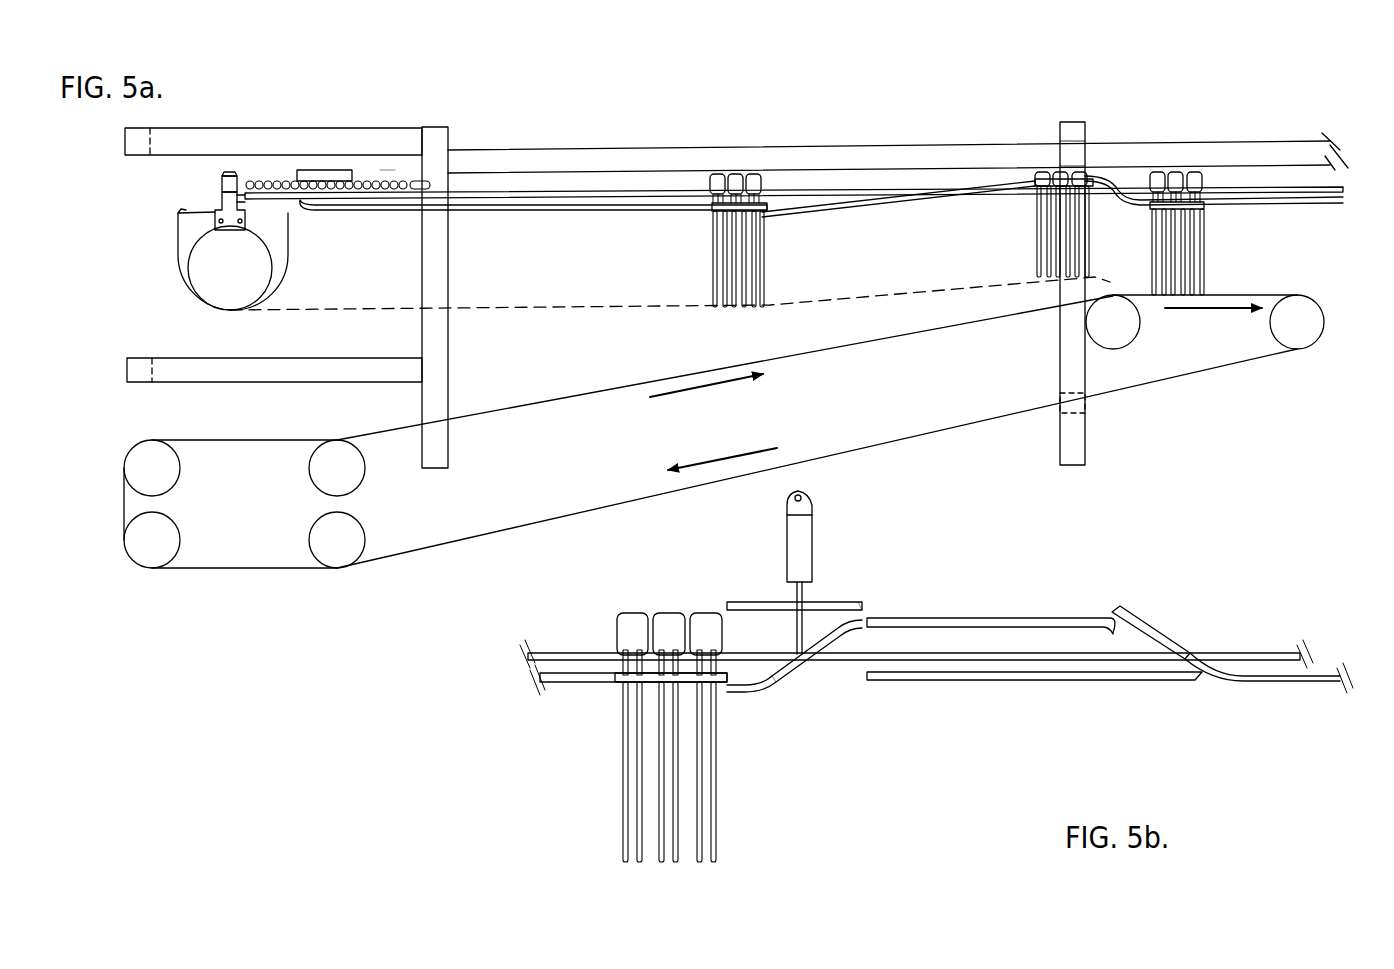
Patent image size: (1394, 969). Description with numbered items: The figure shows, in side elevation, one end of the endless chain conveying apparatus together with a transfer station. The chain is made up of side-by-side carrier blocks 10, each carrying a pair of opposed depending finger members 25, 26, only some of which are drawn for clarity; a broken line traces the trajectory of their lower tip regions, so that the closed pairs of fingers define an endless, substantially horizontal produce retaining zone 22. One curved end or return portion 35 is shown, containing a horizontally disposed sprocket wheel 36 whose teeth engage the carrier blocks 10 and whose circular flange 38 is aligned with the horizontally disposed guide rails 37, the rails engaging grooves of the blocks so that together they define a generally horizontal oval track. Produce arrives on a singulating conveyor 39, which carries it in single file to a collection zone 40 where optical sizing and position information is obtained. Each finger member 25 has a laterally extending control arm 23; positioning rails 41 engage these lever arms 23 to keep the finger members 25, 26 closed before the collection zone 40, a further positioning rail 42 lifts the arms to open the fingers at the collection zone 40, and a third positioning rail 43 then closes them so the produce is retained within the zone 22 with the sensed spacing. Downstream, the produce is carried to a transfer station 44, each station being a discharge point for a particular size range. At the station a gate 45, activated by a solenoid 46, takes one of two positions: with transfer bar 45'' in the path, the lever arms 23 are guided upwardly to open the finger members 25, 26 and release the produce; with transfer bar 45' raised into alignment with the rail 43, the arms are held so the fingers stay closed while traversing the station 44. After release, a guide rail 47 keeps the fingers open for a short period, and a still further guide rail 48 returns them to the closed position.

In FIG. 5A, the carrier block 10 is at (213, 207).
In FIG. 5B, the carrier block 10 is at (667, 627).
In FIG. 5A, the produce retaining zone 22 is at (1310, 283).
In FIG. 5A, the control arm 23 is at (178, 213).
In FIG. 5B, the control arm 23 is at (625, 685).
In FIG. 5A, the finger member 25 is at (178, 277).
In FIG. 5B, the finger member 25 is at (623, 820).
In FIG. 5A, the finger member 26 is at (283, 278).
In FIG. 5B, the finger member 26 is at (694, 772).
In FIG. 5A, the curved end or return portion 35 is at (387, 172).
In FIG. 5A, the sprocket wheel 36 is at (263, 182).
In FIG. 5A, the guide rail 37 is at (475, 194).
In FIG. 5B, the guide rail 37 is at (600, 657).
In FIG. 5A, the circular flange 38 is at (313, 192).
In FIG. 5A, the singulating conveyor 39 is at (858, 447).
In FIG. 5A, the collection zone 40 is at (1130, 282).
In FIG. 5A, the positioning rail 41 is at (550, 205).
In FIG. 5A, the positioning rail 42 is at (867, 203).
In FIG. 5A, the positioning rail 43 is at (1110, 176).
In FIG. 5B, the positioning rail 43 is at (560, 672).
In FIG. 5B, the transfer station 44 is at (838, 600).
In FIG. 5B, the gate 45 is at (806, 690).
In FIG. 5B, the transfer bar 45' is at (882, 582).
In FIG. 5B, the transfer bar 45'' is at (778, 713).
In FIG. 5B, the solenoid 46 is at (787, 568).
In FIG. 5B, the guide rail 47 is at (918, 620).
In FIG. 5B, the guide rail 48 is at (1150, 630).